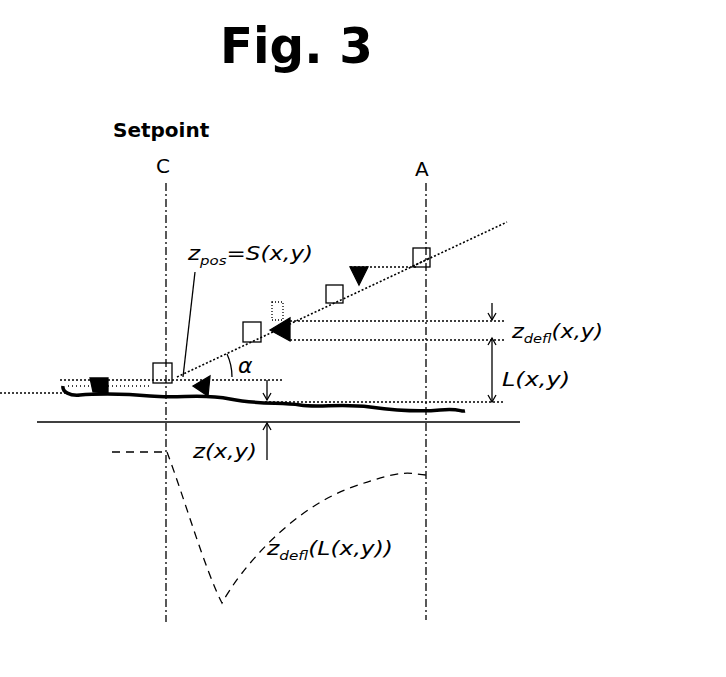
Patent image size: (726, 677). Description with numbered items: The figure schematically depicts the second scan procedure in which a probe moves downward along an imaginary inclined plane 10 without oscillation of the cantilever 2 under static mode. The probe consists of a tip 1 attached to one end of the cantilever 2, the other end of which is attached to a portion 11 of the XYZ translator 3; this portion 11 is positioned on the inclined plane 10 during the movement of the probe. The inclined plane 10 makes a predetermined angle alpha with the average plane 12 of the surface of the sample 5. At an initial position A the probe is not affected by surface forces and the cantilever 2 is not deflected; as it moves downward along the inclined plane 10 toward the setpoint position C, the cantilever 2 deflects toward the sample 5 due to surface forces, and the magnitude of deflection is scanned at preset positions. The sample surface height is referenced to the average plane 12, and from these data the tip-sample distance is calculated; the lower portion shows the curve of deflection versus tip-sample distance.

The tip 1 is at (355, 265).
The cantilever 2 is at (392, 265).
The XYZ translator 3 is at (430, 262).
The sample 5 is at (73, 395).
The imaginary inclined plane 10 is at (466, 240).
The portion of the XYZ translator 11 is at (425, 268).
The average plane 12 is at (313, 424).